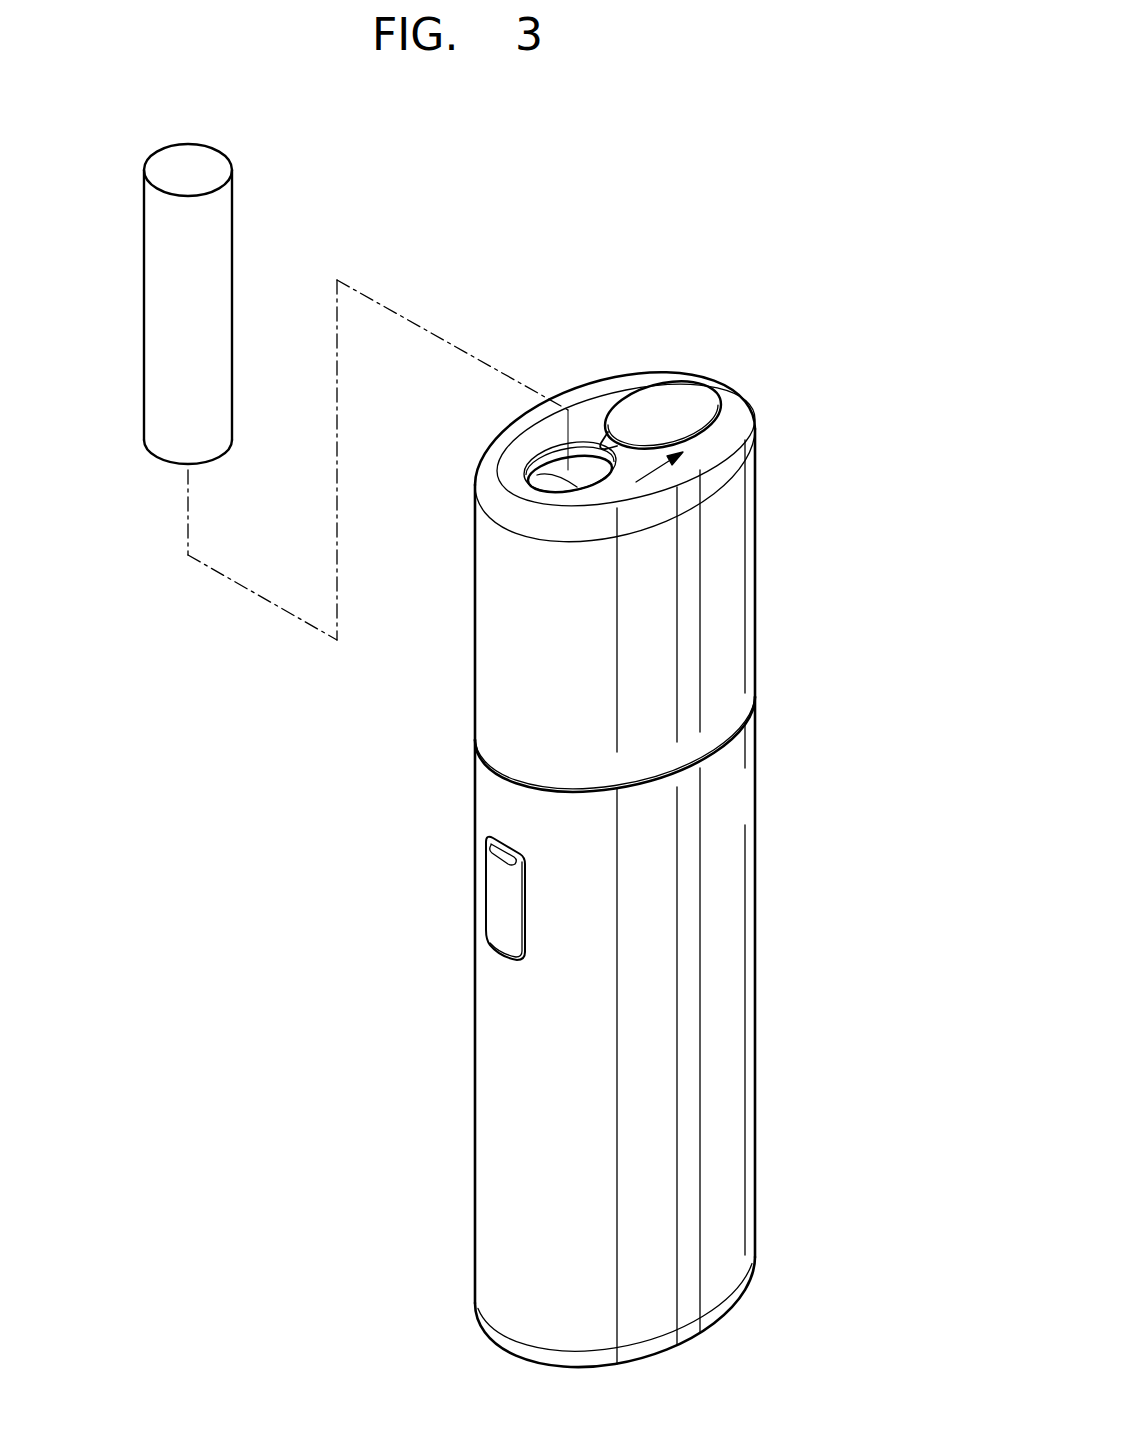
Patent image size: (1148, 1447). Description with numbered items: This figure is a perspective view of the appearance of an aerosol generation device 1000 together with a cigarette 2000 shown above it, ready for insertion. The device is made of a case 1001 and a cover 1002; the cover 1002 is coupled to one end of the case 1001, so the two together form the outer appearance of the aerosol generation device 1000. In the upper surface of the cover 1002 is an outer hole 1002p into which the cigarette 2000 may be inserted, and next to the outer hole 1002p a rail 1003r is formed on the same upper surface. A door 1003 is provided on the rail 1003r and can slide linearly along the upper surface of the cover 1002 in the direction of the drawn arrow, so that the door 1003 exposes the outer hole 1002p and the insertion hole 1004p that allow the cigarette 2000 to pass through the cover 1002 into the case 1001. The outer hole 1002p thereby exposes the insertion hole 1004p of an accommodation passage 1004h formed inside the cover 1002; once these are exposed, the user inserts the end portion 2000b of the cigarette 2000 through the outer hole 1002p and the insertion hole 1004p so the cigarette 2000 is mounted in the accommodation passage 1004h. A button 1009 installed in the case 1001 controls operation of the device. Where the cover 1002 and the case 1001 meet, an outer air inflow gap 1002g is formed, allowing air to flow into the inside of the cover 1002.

The aerosol generation device 1000 is at (691, 241).
The case 1001 is at (607, 1042).
The cover 1002 is at (608, 534).
The outer air inflow gap 1002g is at (500, 774).
The outer hole 1002p is at (545, 445).
The door 1003 is at (658, 385).
The rail 1003r is at (610, 440).
The accommodation passage 1004h is at (545, 485).
The insertion hole 1004p is at (530, 443).
The button 1009 is at (503, 902).
The cigarette 2000 is at (239, 329).
The end portion of the cigarette 2000b is at (217, 462).